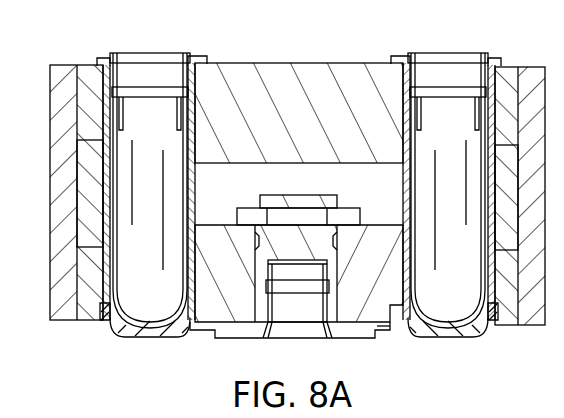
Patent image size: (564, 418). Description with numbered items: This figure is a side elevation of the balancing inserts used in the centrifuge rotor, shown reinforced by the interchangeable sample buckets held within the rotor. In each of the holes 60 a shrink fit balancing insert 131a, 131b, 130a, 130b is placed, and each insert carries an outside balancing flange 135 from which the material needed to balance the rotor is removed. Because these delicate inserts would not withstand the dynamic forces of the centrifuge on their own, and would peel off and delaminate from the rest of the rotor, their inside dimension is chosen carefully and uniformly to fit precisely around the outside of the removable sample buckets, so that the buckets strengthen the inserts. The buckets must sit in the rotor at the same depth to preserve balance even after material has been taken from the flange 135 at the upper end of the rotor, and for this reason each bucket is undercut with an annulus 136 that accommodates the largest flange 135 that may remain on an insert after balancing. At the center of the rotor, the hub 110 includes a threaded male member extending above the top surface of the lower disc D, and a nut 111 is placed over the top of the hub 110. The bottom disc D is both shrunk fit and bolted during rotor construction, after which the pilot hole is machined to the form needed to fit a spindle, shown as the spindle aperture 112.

The holes 60 is at (112, 90).
The hub 110 is at (247, 338).
The nut 111 is at (243, 208).
The spindle aperture 112 is at (288, 338).
The balancing insert 130a is at (100, 302).
The balancing insert 130b is at (402, 327).
The balancing insert 131a is at (108, 82).
The balancing insert 131b is at (420, 56).
The balancing flange 135 is at (193, 57).
The annulus 136 is at (400, 72).
The lower disc D is at (393, 305).